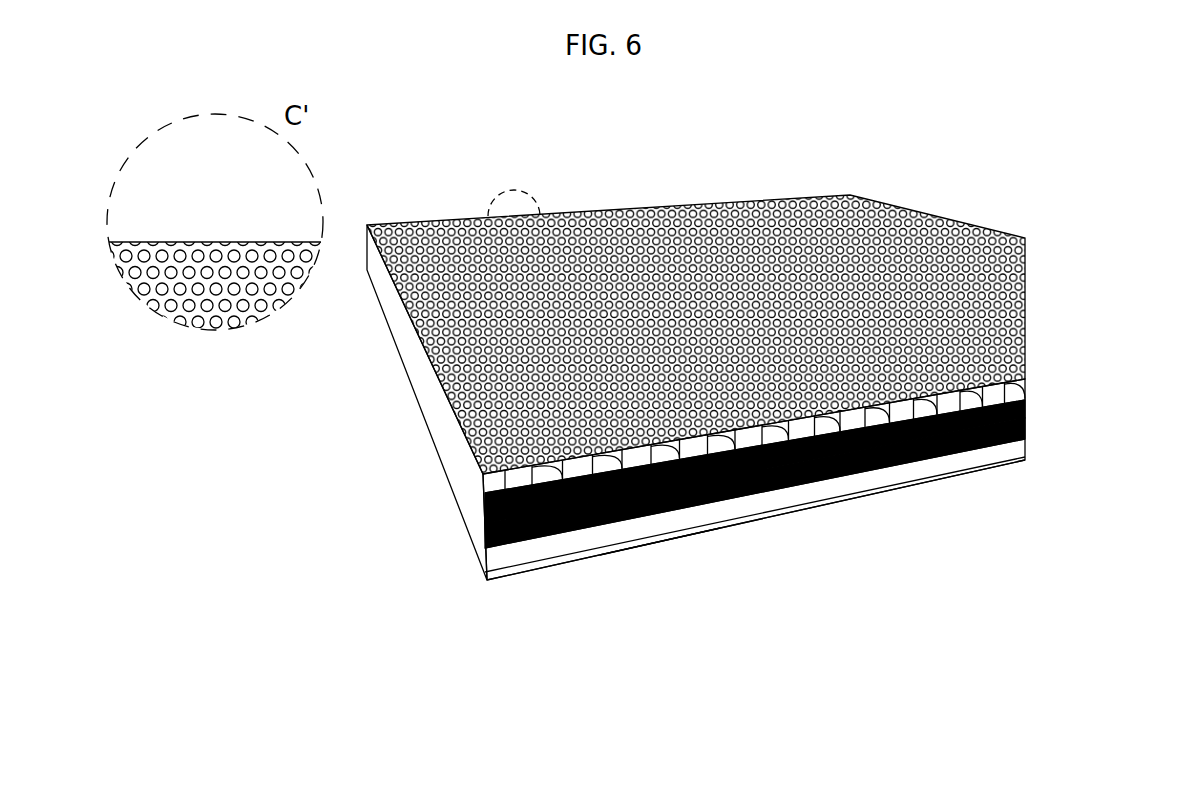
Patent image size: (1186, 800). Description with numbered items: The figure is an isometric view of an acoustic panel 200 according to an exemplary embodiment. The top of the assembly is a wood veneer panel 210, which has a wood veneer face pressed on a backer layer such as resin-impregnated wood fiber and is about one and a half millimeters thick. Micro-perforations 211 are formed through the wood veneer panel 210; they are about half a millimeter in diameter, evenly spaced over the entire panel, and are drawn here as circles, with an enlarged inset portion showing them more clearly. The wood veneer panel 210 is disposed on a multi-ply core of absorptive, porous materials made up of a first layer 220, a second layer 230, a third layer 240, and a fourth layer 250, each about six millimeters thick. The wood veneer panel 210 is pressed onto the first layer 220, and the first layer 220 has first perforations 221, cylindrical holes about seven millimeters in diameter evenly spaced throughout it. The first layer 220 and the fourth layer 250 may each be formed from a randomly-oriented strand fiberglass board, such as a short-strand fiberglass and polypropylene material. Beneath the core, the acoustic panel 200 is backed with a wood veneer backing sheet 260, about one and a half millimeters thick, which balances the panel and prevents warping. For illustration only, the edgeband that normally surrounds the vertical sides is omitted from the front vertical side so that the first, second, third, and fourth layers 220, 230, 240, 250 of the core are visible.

The acoustic panel 200 is at (906, 95).
The wood veneer panel 210 is at (567, 348).
The micro-perforations 211 is at (171, 272).
The first layer 220 is at (513, 484).
The first perforations 221 is at (485, 492).
The second layer 230 is at (497, 517).
The third layer 240 is at (507, 542).
The fourth layer 250 is at (515, 557).
The wood veneer backing sheet 260 is at (653, 548).